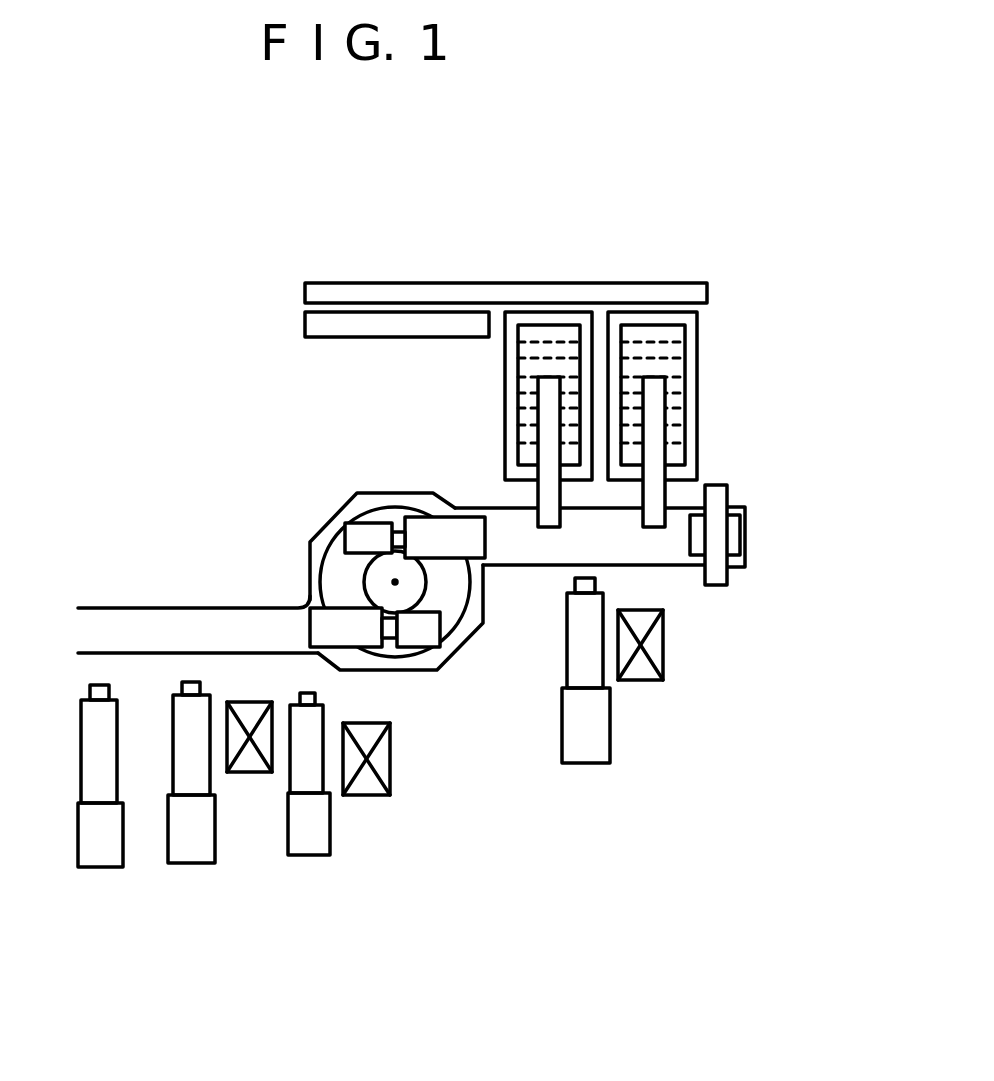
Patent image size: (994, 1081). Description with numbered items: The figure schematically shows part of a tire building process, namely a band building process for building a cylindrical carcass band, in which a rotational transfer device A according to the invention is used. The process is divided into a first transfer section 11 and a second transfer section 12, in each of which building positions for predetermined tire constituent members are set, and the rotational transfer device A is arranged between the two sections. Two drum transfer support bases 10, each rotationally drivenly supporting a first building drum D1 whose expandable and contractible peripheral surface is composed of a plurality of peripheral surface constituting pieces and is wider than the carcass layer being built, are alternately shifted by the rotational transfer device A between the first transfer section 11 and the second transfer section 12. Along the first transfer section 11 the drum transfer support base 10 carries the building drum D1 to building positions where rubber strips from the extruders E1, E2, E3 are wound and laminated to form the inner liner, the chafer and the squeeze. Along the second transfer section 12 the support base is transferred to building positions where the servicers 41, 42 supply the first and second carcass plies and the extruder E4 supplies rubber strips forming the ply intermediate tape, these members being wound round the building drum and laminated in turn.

The drum transfer support base 10 is at (357, 533).
The first transfer section 11 is at (218, 623).
The second transfer section 12 is at (653, 545).
The servicer for first carcass ply 41 is at (585, 317).
The servicer for second carcass ply 42 is at (701, 342).
The rotational transfer device A is at (455, 598).
The first building drum D1 is at (472, 533).
The extruder E1 is at (112, 840).
The extruder E2 is at (208, 828).
The extruder E3 is at (318, 827).
The extruder E4 is at (597, 728).